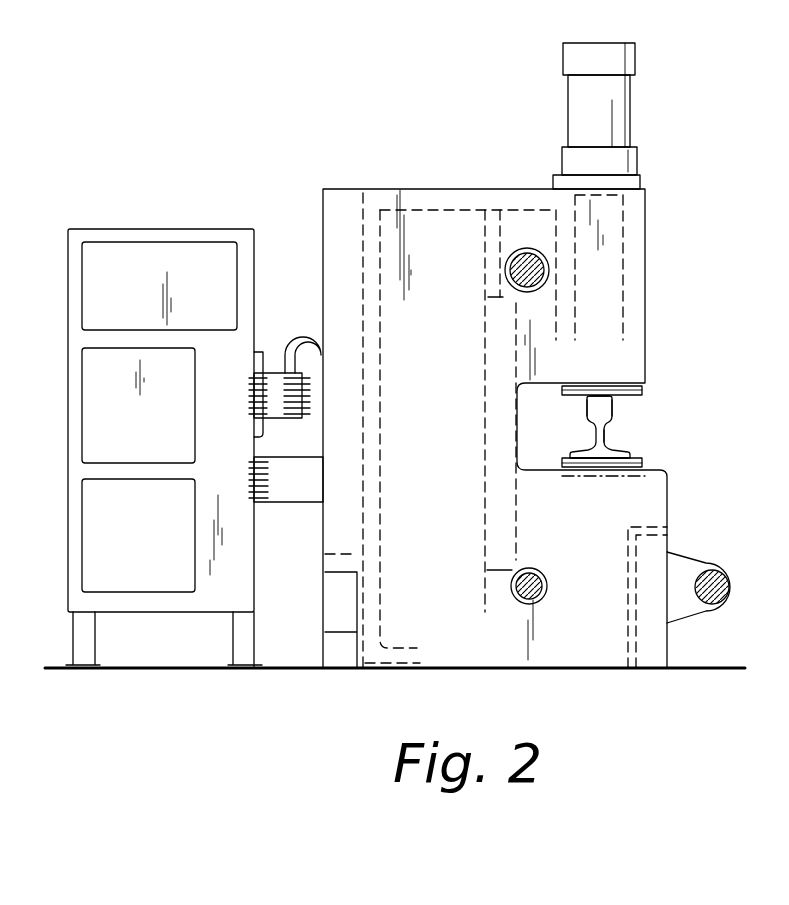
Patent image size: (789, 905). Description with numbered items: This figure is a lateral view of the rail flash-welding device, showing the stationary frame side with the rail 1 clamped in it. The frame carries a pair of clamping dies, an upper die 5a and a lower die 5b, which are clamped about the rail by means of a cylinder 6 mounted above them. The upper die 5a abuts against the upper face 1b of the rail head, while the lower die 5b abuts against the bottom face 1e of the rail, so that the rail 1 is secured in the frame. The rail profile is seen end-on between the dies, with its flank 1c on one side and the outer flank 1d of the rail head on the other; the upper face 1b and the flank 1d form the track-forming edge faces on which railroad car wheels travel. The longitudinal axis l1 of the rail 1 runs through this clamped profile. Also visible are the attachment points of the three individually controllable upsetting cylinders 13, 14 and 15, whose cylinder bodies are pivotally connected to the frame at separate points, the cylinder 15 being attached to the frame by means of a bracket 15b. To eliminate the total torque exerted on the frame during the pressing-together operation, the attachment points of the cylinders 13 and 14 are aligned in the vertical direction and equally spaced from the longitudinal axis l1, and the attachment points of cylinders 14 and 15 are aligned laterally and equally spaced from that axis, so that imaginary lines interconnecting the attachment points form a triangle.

The rail 1 is at (605, 420).
The upper face of the rail head 1b is at (600, 396).
The flank of the rail 1c is at (588, 411).
The outer flank of the rail head 1d is at (611, 405).
The bottom face of the rail 1e is at (627, 466).
The longitudinal axis of the rail l1 is at (607, 432).
The upper clamping die 5a is at (640, 391).
The lower clamping die 5b is at (638, 463).
The cylinder 6 is at (636, 58).
The upsetting cylinder 13 is at (521, 248).
The upsetting cylinder 14 is at (529, 604).
The upsetting cylinder 15 is at (731, 579).
The bracket 15b is at (687, 570).